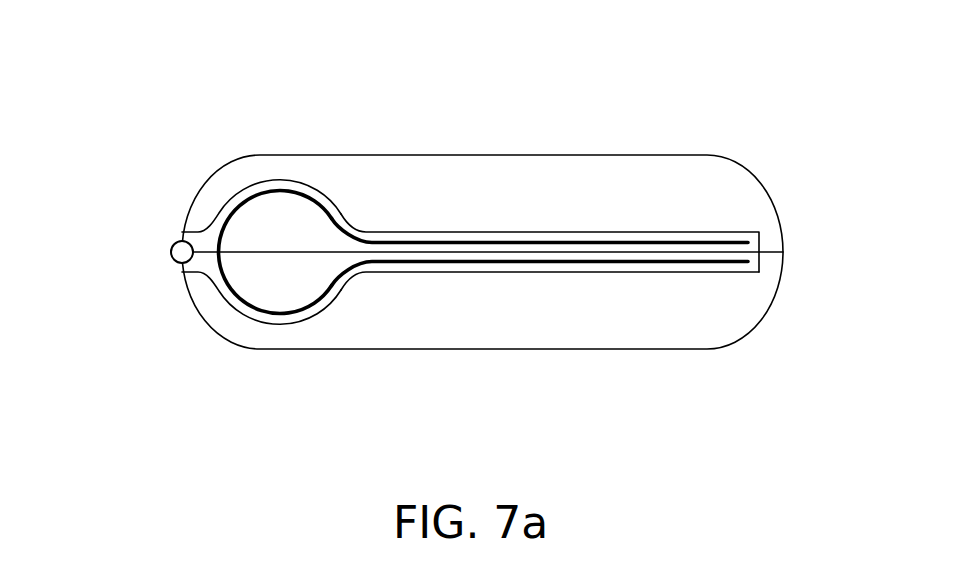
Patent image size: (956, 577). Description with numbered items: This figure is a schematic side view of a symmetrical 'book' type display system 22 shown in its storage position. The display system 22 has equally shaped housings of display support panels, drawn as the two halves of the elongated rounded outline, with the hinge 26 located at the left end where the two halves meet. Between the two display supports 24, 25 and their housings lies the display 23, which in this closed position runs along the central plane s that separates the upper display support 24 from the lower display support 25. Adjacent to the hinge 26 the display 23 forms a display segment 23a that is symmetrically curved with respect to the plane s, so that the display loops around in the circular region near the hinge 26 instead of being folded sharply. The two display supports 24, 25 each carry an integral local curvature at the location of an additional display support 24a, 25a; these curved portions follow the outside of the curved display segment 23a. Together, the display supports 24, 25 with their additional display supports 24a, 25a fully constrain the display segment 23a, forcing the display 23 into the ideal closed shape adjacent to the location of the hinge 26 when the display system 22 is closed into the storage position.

The display system 22 is at (619, 371).
The display 23 is at (603, 243).
The display segment 23a is at (242, 303).
The display support 24 is at (355, 228).
The additional display support 24a is at (279, 180).
The display support 25 is at (352, 277).
The additional display support 25a is at (278, 325).
The hinge 26 is at (180, 250).
The plane s is at (528, 254).